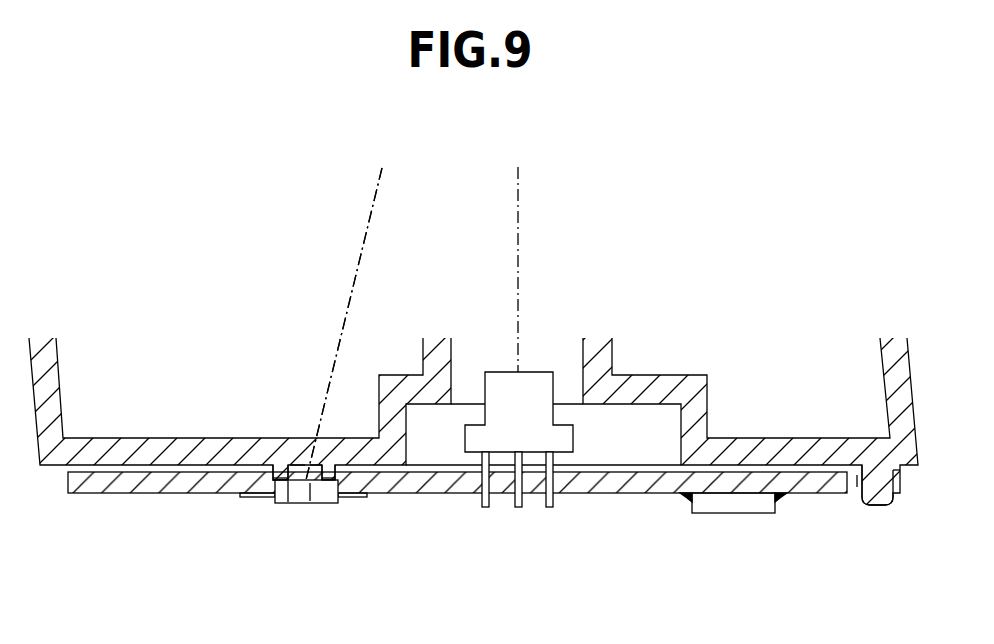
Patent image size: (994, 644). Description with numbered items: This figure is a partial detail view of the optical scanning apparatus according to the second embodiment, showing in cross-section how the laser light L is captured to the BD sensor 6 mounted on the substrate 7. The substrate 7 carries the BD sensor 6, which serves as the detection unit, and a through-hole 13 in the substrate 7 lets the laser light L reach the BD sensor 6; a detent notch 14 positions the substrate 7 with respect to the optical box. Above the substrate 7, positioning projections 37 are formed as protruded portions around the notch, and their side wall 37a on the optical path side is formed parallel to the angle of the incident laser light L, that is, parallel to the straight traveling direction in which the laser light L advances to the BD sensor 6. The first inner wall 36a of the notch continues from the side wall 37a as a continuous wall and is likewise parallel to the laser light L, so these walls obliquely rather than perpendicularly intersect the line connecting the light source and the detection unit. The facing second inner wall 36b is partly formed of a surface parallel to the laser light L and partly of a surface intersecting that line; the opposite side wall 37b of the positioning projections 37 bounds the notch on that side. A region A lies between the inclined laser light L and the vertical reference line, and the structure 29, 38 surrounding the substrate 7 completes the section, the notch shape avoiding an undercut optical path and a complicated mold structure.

The housing 29 is at (122, 448).
The substrate 7 is at (603, 485).
The BD sensor 6 is at (302, 503).
The through-hole 13 is at (310, 503).
The positioning projections 37 is at (282, 467).
The side wall 37a is at (290, 503).
The second projection 37b is at (317, 503).
The first inner wall 36a is at (298, 462).
The second inner wall 36b is at (327, 450).
The detent notch 14 is at (857, 488).
The hook 38 is at (880, 500).
The laser light L is at (368, 219).
The region A is at (441, 243).